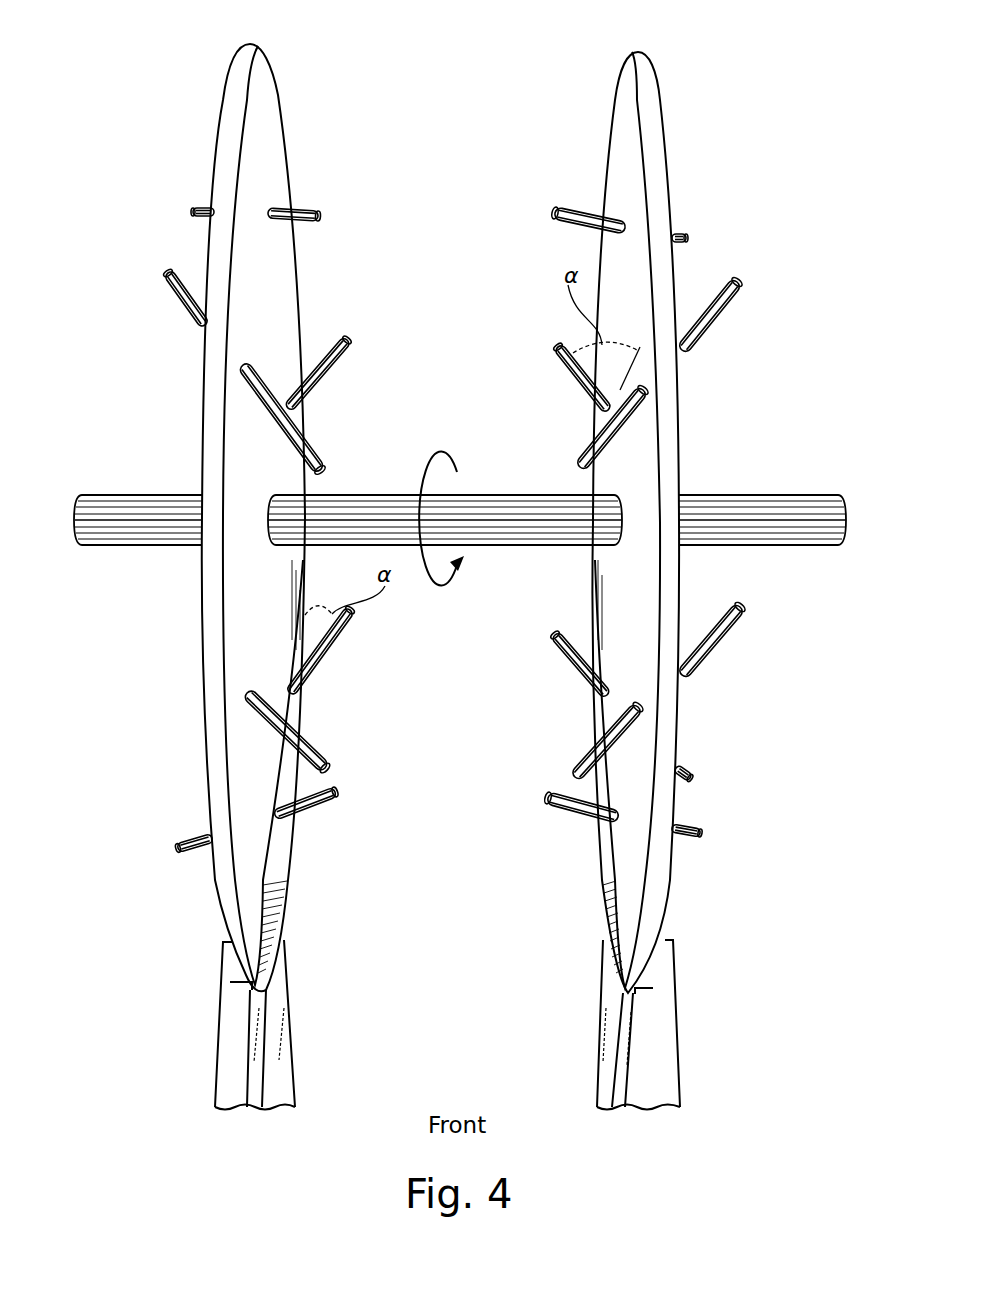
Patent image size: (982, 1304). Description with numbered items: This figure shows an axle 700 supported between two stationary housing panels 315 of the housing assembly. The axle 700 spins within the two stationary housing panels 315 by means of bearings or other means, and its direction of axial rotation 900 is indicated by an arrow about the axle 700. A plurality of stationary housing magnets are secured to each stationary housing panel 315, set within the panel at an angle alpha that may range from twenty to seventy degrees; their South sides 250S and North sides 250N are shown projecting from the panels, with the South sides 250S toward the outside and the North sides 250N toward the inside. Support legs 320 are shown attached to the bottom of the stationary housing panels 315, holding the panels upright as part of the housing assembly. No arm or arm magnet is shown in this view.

The stationary housing panel 315 is at (227, 70).
The South end of stationary housing magnet 250S is at (190, 212).
The North end of stationary housing magnet 250N is at (320, 216).
The axle 700 is at (755, 495).
The direction of axial rotation 900 is at (423, 517).
The support leg of housing assembly 320 is at (218, 1020).